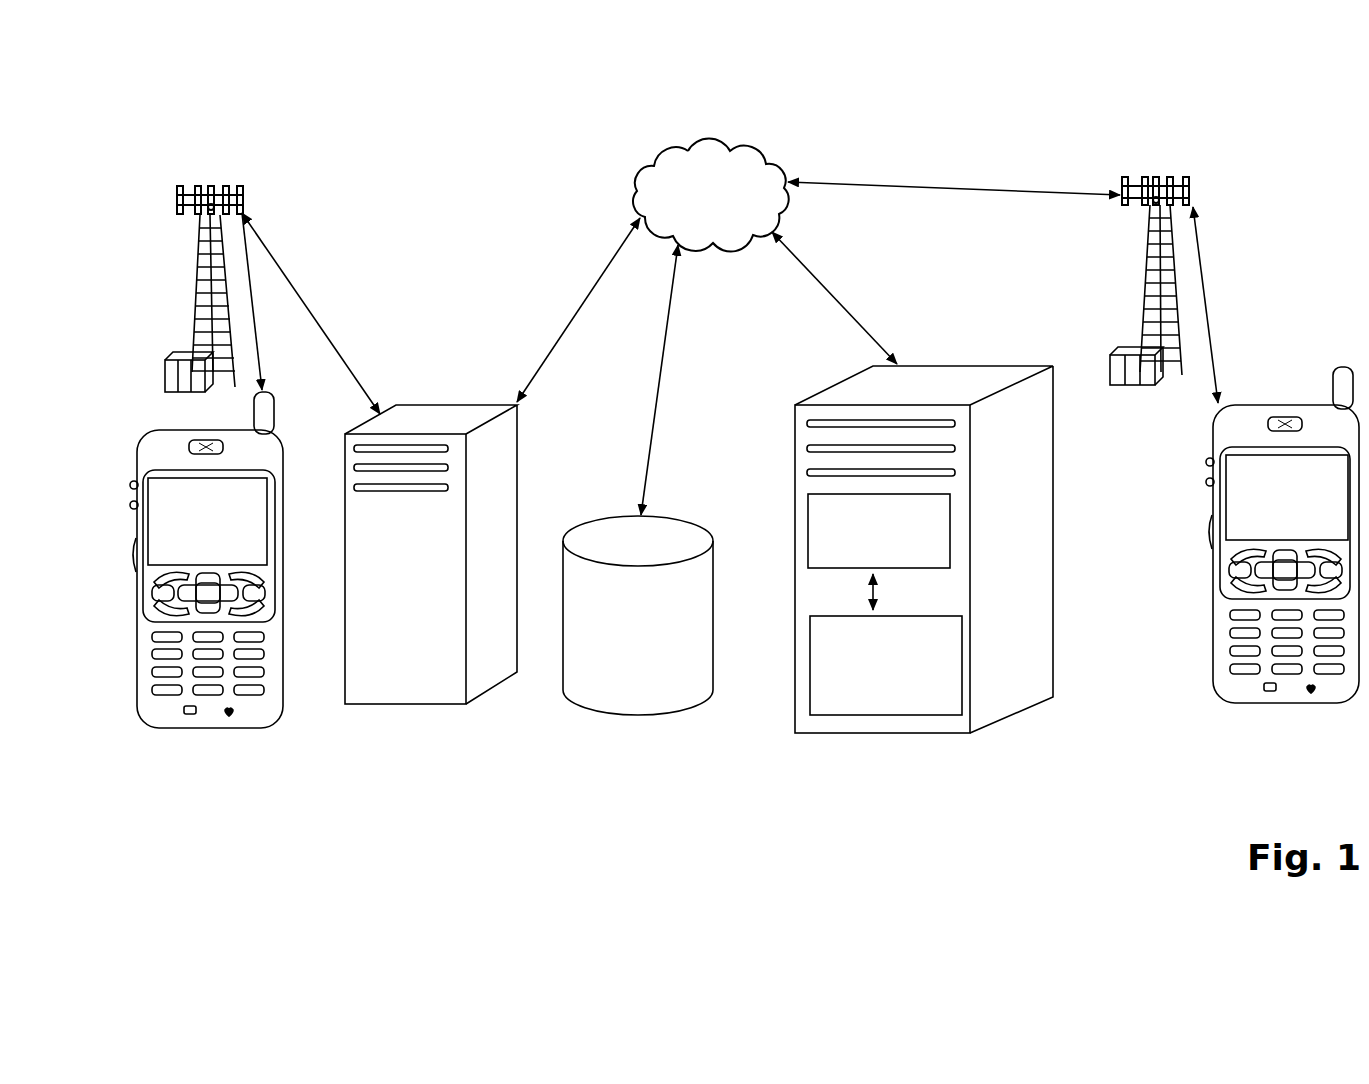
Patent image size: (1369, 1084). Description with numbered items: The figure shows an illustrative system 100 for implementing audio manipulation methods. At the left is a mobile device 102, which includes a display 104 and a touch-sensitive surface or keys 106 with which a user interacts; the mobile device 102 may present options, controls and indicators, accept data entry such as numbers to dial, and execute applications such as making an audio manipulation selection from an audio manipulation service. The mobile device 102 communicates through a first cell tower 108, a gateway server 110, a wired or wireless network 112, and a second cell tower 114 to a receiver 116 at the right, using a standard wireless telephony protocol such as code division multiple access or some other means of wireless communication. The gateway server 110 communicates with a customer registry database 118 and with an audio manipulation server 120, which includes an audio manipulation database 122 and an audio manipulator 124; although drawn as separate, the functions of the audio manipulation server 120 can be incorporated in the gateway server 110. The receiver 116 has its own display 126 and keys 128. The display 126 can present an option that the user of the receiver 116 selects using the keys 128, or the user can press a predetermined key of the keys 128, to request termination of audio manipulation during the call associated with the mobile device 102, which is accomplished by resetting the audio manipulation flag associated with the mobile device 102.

The system 100 is at (730, 337).
The mobile device 102 is at (206, 730).
The display 104 is at (158, 512).
The keys 106 is at (128, 575).
The first cell tower 108 is at (176, 394).
The gateway server 110 is at (421, 706).
The wired or wireless network 112 is at (636, 196).
The second cell tower 114 is at (1126, 387).
The receiver 116 is at (1274, 707).
The customer registry database 118 is at (594, 712).
The audio manipulation server 120 is at (840, 734).
The audio manipulation database 122 is at (816, 678).
The audio manipulator 124 is at (812, 522).
The display 126 is at (1228, 485).
The keys 128 is at (1205, 565).